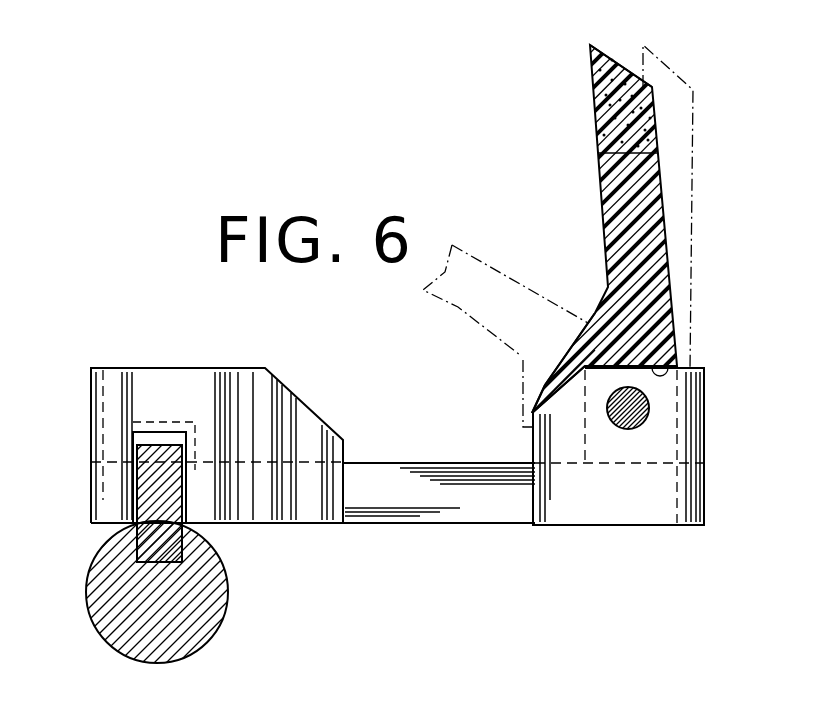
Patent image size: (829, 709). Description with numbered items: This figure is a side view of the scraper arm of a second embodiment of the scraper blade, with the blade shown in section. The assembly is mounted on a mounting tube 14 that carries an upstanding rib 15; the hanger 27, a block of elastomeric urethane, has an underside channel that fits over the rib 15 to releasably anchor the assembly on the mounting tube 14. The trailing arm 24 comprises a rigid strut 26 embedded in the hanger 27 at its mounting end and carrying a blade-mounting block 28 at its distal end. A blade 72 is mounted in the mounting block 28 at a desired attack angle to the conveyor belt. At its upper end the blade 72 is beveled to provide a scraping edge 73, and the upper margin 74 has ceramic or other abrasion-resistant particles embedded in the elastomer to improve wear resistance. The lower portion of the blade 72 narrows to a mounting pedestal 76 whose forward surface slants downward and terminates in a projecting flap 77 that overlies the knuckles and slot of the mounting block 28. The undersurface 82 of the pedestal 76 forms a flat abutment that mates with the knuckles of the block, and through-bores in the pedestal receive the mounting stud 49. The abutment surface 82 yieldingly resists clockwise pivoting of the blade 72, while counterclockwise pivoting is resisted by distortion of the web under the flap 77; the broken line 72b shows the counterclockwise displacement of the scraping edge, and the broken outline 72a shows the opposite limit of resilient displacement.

The mounting tube 14 is at (200, 590).
The upstanding rib 15 is at (135, 500).
The trailing arm 24 is at (443, 523).
The rigid strut 26 is at (455, 463).
The hanger 27 is at (92, 436).
The blade-mounting block 28 is at (700, 438).
The mounting stud 49 is at (637, 412).
The blade 72 is at (648, 193).
The lever first phantom position 72a is at (695, 132).
The broken line showing counterclockwise displacement of blade 72b is at (470, 322).
The scraping edge 73 is at (590, 46).
The upper margin 74 is at (597, 122).
The mounting pedestal 76 is at (598, 328).
The projecting flap 77 is at (545, 380).
The undersurface 82 is at (665, 372).